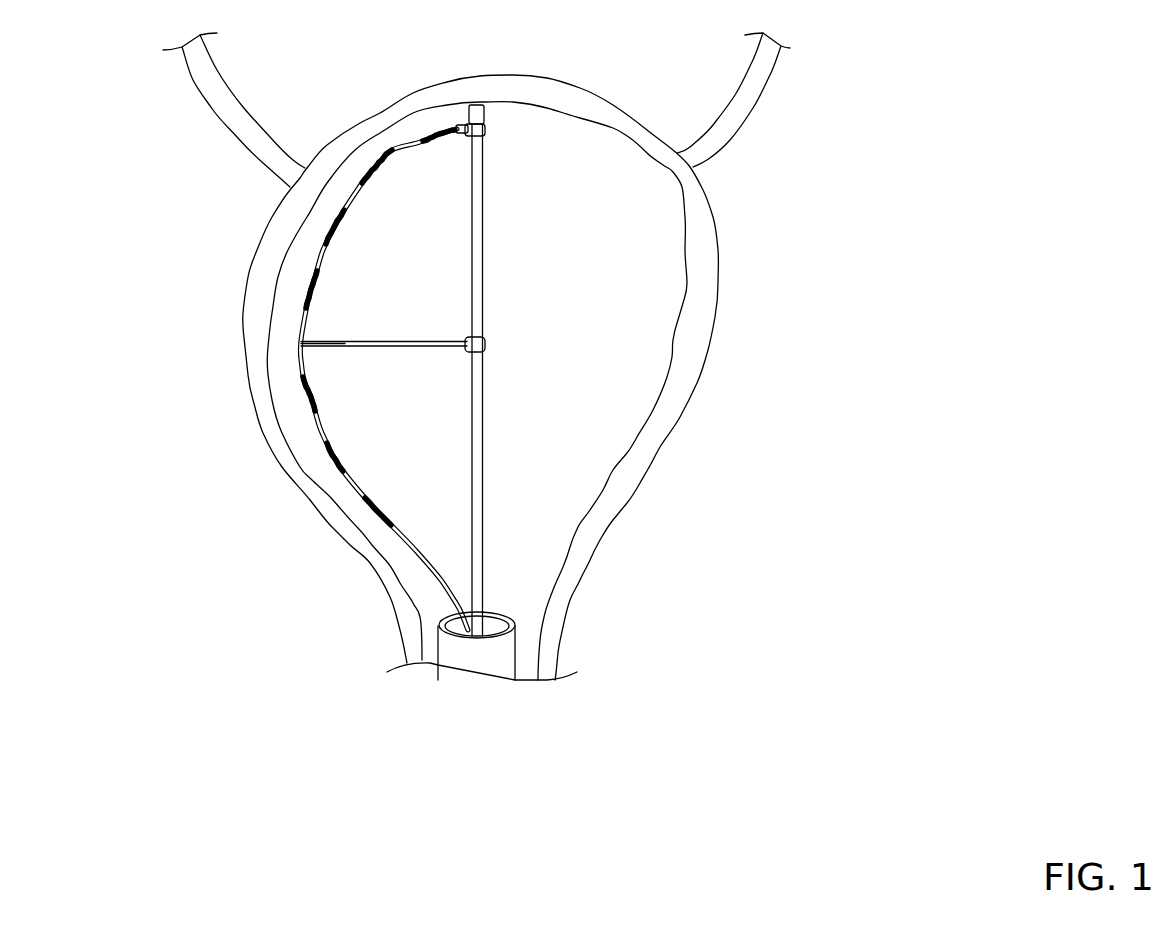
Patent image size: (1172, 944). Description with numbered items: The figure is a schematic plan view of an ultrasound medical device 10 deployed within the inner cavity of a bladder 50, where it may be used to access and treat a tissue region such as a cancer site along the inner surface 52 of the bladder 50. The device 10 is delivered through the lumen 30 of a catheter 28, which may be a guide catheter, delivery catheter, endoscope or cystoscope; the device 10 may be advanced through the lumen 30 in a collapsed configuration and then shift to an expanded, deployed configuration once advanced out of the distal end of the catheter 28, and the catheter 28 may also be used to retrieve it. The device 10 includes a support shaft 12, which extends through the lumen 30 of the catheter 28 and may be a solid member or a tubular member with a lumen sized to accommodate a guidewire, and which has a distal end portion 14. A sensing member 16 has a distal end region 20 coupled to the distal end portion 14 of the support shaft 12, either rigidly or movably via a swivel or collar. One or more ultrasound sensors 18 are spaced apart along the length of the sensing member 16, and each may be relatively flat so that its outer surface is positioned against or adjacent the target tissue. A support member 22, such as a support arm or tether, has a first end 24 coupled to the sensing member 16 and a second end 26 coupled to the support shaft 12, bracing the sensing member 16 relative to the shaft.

The ultrasound medical device 10 is at (410, 356).
The support shaft 12 is at (490, 443).
The distal end portion 14 is at (497, 127).
The sensing member 16 is at (336, 428).
The ultrasound sensors 18 is at (381, 176).
The distal end region 20 is at (477, 105).
The support member 22 is at (341, 355).
The first end 24 is at (292, 348).
The second end 26 is at (487, 345).
The catheter 28 is at (542, 616).
The lumen 30 is at (502, 608).
The bladder 50 is at (805, 227).
The inner surface 52 is at (662, 371).